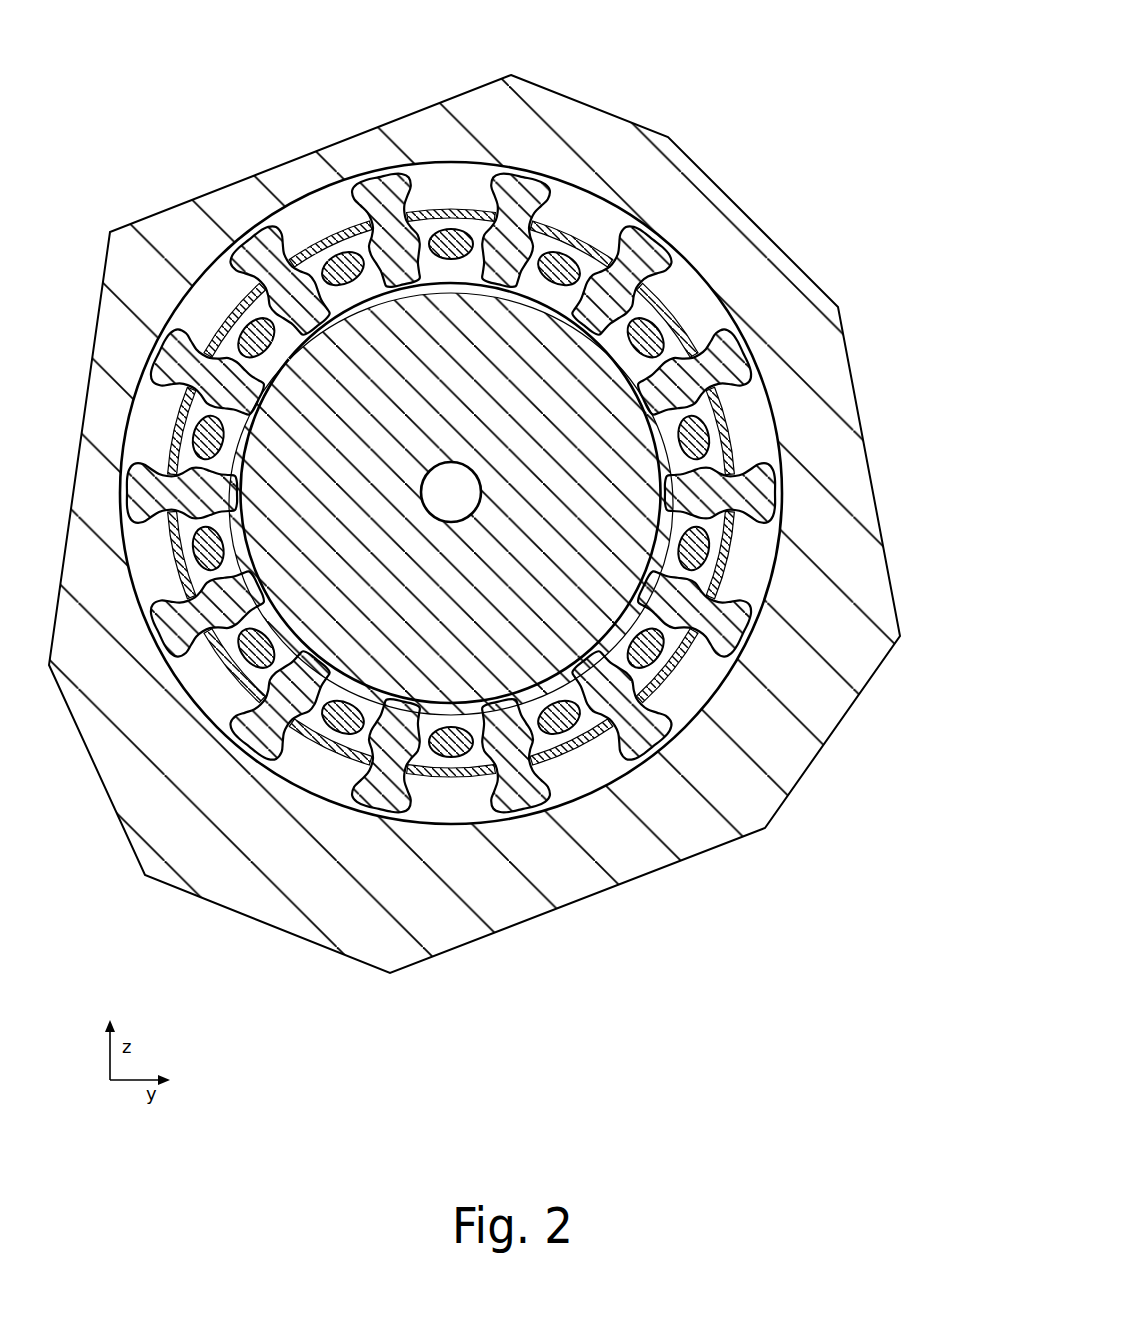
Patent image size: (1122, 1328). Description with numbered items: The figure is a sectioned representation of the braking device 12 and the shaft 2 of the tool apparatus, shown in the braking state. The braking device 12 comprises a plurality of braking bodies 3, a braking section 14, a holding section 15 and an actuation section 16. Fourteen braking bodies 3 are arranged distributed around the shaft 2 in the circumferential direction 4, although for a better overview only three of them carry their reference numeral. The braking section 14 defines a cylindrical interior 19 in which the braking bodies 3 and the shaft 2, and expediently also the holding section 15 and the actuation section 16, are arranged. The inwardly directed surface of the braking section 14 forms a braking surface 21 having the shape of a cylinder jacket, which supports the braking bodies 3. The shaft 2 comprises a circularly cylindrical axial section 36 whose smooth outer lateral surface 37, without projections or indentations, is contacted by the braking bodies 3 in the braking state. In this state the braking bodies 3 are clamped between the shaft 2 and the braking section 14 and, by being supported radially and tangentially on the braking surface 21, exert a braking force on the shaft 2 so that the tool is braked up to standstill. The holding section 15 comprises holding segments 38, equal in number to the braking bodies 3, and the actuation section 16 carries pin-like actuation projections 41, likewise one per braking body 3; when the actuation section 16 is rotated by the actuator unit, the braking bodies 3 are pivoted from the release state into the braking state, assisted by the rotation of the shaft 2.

The shaft 2 is at (450, 392).
The axial section 36 is at (455, 292).
The braking bodies 3 is at (656, 235).
The circumferential direction 4 is at (300, 680).
The braking device 12 is at (146, 83).
The braking section 14 is at (588, 128).
The holding section 15 is at (317, 251).
The actuation section 16 is at (527, 554).
The actuation projections 41 is at (341, 267).
The cylindrical interior 19 is at (753, 428).
The braking surface 21 is at (775, 590).
The lateral surface 37 is at (281, 350).
The holding segments 38 is at (673, 314).